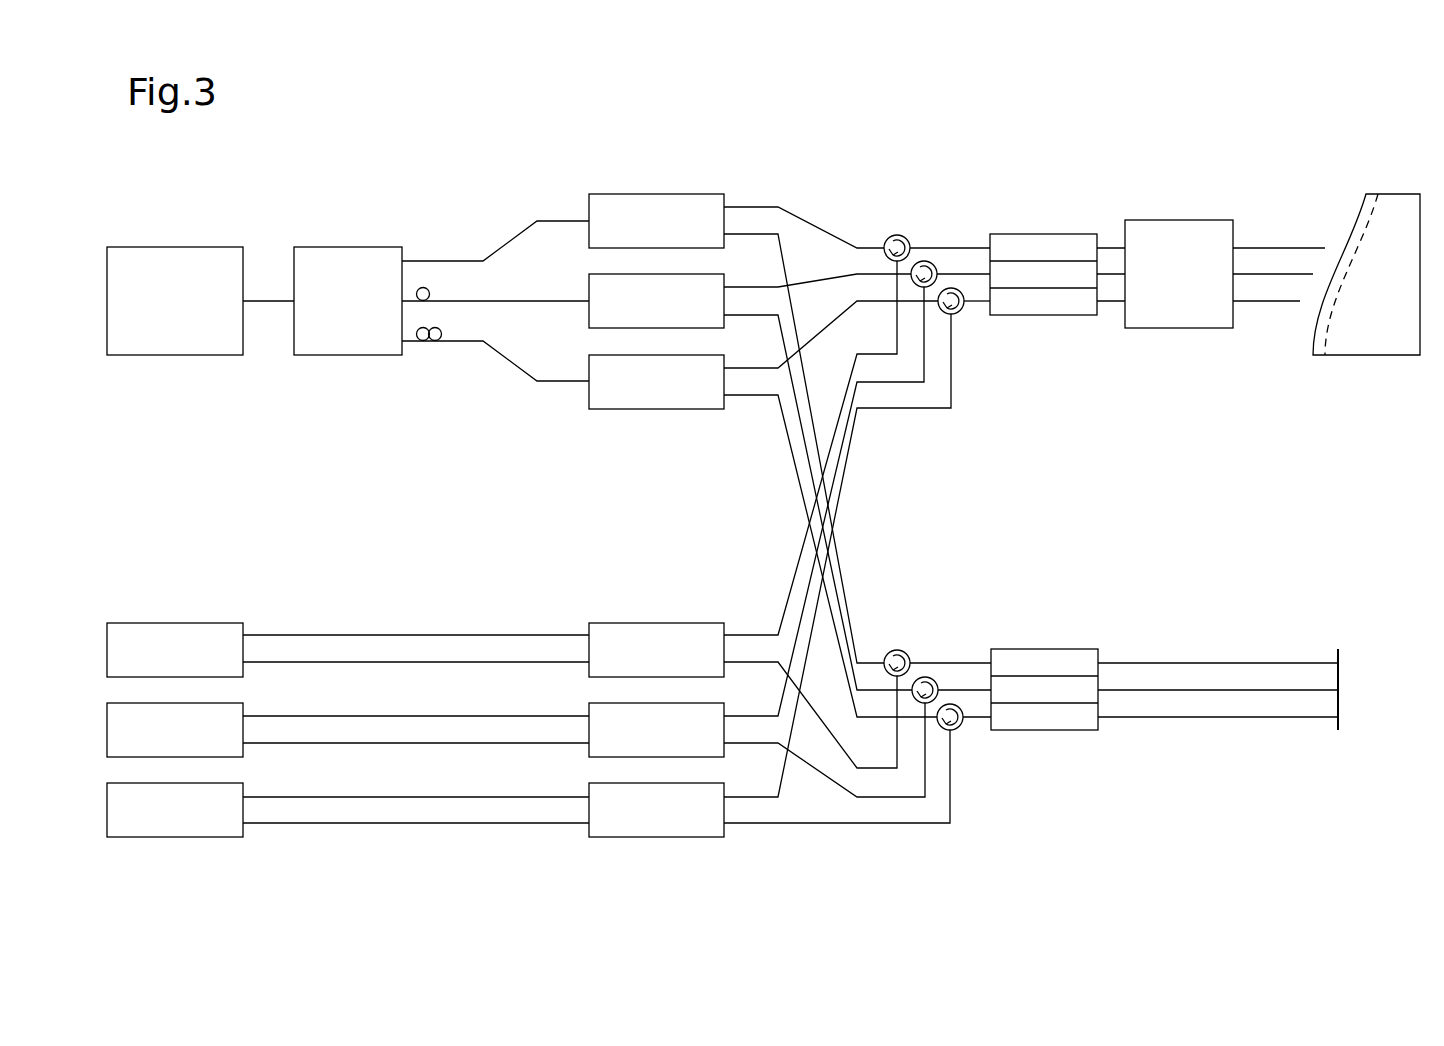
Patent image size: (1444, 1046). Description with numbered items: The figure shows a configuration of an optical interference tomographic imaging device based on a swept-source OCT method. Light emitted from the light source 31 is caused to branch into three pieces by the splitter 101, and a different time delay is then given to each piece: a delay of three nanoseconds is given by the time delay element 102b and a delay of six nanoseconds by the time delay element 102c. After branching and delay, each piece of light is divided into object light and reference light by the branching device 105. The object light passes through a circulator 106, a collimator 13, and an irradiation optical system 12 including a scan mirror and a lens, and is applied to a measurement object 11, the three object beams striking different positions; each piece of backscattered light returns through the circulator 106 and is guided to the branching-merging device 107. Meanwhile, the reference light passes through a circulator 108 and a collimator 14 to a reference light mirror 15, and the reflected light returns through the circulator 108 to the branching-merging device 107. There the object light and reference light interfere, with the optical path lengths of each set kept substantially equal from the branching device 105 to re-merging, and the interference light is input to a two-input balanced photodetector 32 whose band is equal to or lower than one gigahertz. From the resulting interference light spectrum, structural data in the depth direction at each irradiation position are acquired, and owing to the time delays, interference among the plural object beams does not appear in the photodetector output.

The light source 31 is at (188, 245).
The splitter 101 is at (322, 245).
The time delay element 102b is at (422, 287).
The time delay element 102c is at (422, 343).
The branching device 105 is at (670, 194).
The circulator 106 is at (897, 233).
The collimator 13 is at (1017, 234).
The irradiation optical system 12 is at (1152, 220).
The measurement object 11 is at (1392, 194).
The circulator 108 is at (898, 638).
The collimator 14 is at (1043, 730).
The reference light mirror 15 is at (1338, 730).
The balanced photodetector 32 is at (160, 837).
The branching-merging device 107 is at (642, 837).